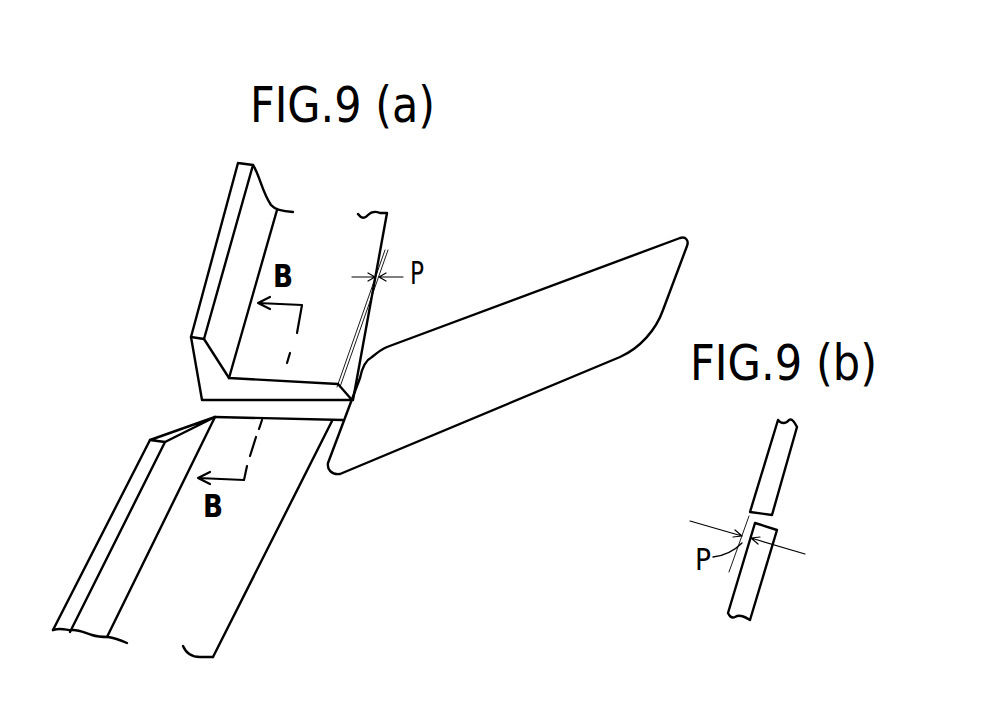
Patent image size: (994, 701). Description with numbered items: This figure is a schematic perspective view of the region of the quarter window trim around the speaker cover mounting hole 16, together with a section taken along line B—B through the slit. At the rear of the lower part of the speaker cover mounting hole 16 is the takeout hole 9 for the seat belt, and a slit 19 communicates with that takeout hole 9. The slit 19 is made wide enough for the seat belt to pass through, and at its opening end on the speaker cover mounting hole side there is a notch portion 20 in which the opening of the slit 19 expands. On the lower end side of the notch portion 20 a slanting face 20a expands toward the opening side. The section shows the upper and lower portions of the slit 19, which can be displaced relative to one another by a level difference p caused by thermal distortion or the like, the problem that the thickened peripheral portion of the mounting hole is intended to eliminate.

The takeout hole 9 is at (480, 412).
The speaker cover mounting hole 16 is at (233, 215).
The slit 19 is at (235, 412).
The notch portion 20 is at (190, 397).
The slanting face 20a is at (172, 437).